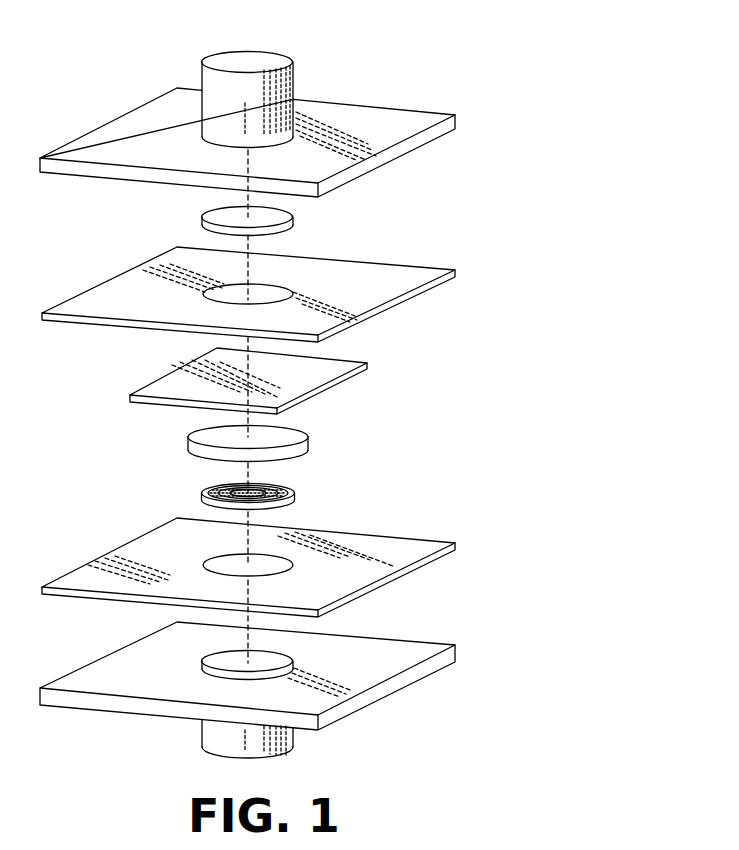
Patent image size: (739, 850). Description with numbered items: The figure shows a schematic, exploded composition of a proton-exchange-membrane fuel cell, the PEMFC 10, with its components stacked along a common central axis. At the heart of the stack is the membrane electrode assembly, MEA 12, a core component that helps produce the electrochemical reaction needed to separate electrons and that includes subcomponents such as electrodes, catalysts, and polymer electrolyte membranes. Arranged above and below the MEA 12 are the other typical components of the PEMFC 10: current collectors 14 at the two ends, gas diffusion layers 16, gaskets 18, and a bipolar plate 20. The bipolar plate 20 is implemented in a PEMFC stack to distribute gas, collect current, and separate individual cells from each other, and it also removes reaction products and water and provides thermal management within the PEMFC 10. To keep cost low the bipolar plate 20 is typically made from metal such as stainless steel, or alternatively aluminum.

The PEMFC 10 is at (497, 48).
The membrane electrode assembly 12 is at (138, 386).
The current collectors 14 is at (202, 80).
The gas diffusion layers 16 is at (203, 222).
The gaskets 18 is at (78, 295).
The bipolar plate 20 is at (202, 497).